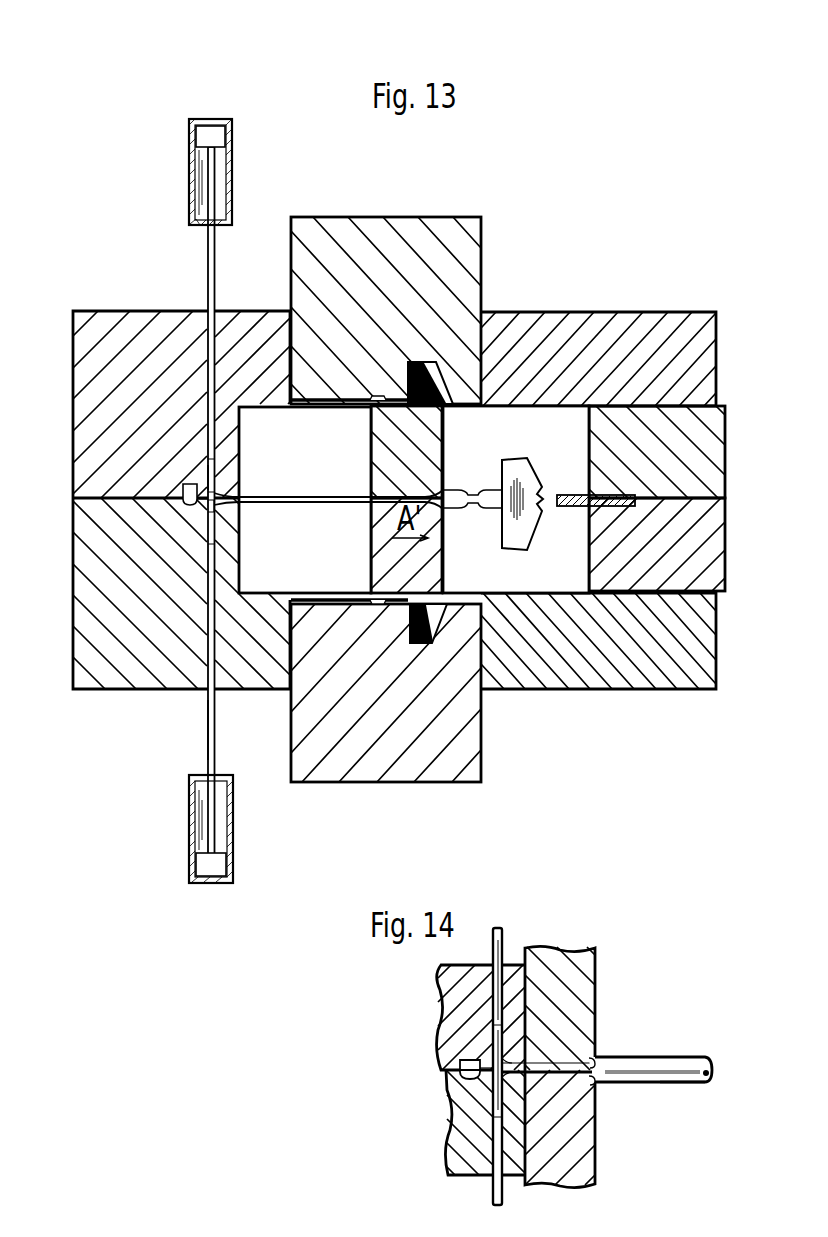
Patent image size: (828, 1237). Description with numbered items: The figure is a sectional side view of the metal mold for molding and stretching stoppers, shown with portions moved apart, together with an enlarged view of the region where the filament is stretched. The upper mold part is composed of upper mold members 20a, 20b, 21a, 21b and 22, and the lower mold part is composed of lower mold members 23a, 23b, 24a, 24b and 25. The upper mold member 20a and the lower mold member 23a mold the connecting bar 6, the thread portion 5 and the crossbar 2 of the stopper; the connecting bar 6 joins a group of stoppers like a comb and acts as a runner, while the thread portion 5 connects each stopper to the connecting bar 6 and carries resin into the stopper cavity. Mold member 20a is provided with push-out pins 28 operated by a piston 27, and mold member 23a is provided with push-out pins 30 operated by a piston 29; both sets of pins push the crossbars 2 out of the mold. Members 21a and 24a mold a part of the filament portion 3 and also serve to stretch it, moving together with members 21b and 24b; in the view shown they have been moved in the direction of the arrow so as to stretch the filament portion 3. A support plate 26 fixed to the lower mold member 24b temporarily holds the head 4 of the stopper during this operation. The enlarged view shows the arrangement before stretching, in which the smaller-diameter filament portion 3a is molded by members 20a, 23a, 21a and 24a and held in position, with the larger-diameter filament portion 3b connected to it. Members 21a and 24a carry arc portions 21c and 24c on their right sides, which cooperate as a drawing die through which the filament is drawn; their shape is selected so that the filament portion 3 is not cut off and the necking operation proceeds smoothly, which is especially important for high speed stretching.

In FIG. 13, the crossbar 2 is at (216, 473).
In FIG. 14, the crossbar 2 is at (496, 1035).
In FIG. 13, the filament portion 3 is at (302, 504).
In FIG. 14, the filament portion 3 is at (692, 1050).
In FIG. 14, the smaller-diameter filament portion 3a is at (540, 1067).
In FIG. 14, the larger-diameter filament portion 3b is at (681, 1088).
In FIG. 13, the head 4 is at (512, 472).
In FIG. 13, the thread portion 5 is at (206, 508).
In FIG. 14, the thread portion 5 is at (450, 1100).
In FIG. 13, the connecting bar 6 is at (195, 507).
In FIG. 14, the connecting bar 6 is at (466, 1075).
In FIG. 13, the upper mold member 20a is at (113, 333).
In FIG. 14, the upper mold member 20a is at (450, 992).
In FIG. 13, the upper mold member 20b is at (635, 330).
In FIG. 13, the upper mold member 21a is at (428, 457).
In FIG. 14, the upper mold member 21a is at (580, 972).
In FIG. 13, the upper mold member 21b is at (682, 453).
In FIG. 14, the arc portion 21c is at (592, 1056).
In FIG. 13, the upper mold member 22 is at (390, 237).
In FIG. 13, the lower mold member 23a is at (122, 677).
In FIG. 14, the lower mold member 23a is at (465, 1145).
In FIG. 13, the lower mold member 23b is at (638, 677).
In FIG. 13, the lower mold member 24a is at (428, 590).
In FIG. 14, the lower mold member 24a is at (580, 1158).
In FIG. 13, the lower mold member 24b is at (685, 583).
In FIG. 14, the arc portion 24c is at (592, 1085).
In FIG. 13, the lower mold member 25 is at (388, 762).
In FIG. 13, the support plate 26 is at (575, 490).
In FIG. 13, the piston 27 is at (232, 176).
In FIG. 13, the push-out pins 28 is at (208, 283).
In FIG. 13, the piston 29 is at (233, 838).
In FIG. 13, the push-out pins 30 is at (208, 732).